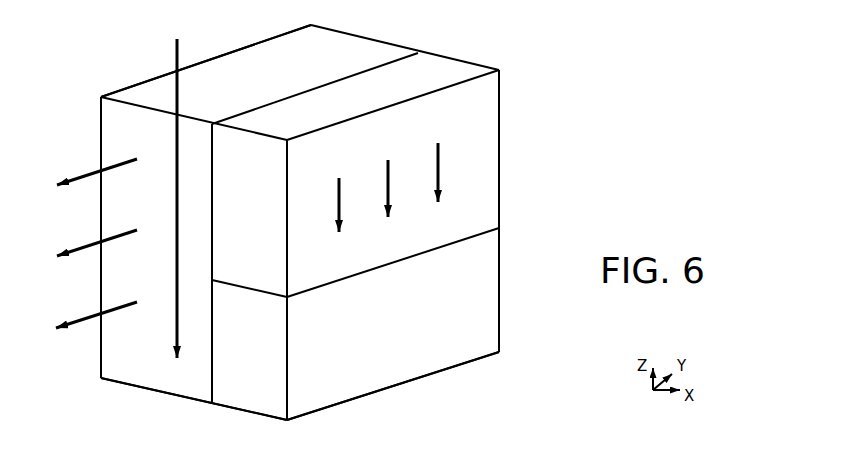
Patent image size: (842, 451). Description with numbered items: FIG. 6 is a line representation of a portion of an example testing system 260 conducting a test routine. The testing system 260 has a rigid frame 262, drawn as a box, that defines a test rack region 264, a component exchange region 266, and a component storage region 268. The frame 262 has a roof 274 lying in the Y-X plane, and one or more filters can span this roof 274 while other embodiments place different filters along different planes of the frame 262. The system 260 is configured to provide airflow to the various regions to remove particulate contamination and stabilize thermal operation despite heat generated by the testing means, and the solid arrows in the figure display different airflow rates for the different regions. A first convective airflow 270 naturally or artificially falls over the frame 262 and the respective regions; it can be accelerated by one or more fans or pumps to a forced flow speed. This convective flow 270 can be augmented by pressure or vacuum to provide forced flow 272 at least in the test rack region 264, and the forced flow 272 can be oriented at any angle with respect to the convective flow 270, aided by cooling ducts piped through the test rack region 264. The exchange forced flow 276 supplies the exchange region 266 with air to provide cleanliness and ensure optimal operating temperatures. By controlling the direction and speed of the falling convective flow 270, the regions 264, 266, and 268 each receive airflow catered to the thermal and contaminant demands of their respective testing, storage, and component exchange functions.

The testing system 260 is at (552, 23).
The rigid frame 262 is at (248, 228).
The test rack region 264 is at (119, 368).
The component exchange region 266 is at (480, 216).
The component storage region 268 is at (466, 346).
The convective airflow 270 is at (178, 46).
The forced flow 272 is at (83, 175).
The roof 274 is at (456, 61).
The exchange forced flow 276 is at (438, 147).